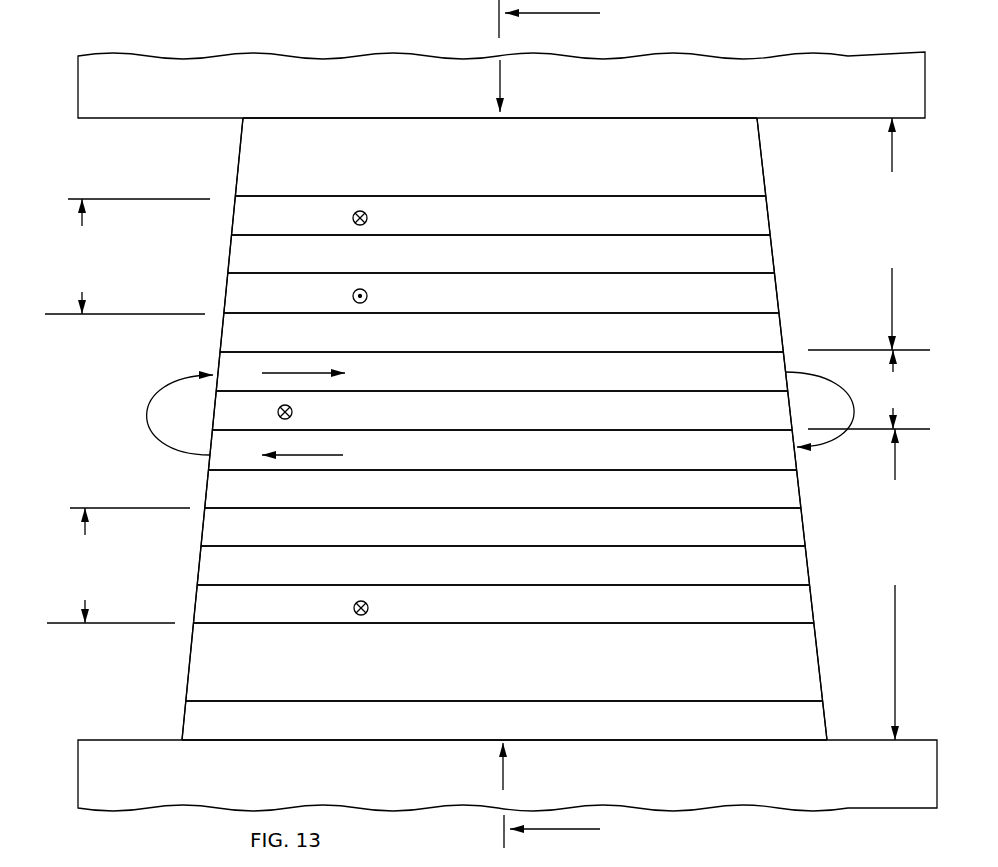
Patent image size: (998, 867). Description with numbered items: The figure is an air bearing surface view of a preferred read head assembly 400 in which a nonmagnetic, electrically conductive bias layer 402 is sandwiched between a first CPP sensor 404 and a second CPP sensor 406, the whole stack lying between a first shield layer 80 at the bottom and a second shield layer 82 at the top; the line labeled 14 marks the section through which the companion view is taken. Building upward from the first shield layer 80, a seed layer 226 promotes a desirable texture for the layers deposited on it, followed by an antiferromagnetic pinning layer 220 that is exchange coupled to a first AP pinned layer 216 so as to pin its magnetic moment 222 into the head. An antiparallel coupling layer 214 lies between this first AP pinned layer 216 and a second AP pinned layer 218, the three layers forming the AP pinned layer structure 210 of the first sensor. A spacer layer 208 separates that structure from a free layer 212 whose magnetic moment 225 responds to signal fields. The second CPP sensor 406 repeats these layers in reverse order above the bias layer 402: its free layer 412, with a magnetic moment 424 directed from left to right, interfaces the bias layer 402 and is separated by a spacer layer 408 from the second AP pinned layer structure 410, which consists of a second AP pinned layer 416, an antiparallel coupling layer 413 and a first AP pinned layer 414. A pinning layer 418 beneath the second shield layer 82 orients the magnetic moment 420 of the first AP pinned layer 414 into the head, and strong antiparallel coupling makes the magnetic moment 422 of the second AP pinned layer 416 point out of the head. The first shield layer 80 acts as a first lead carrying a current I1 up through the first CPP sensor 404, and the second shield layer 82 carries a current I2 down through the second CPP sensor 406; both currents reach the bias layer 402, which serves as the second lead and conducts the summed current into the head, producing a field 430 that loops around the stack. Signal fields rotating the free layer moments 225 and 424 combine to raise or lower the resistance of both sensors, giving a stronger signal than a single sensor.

The section view line for FIG. 14 is at (567, 424).
The magnetic read head assembly 400 is at (800, 45).
The second shield layer 82 is at (655, 90).
The first shield layer 80 is at (740, 784).
The pinning layer 418 is at (745, 157).
The first AP pinned layer 414 is at (743, 212).
The antiparallel coupling layer 413 is at (746, 252).
The second AP pinned layer 416 is at (758, 294).
The spacer layer 408 is at (763, 327).
The free layer 412 is at (774, 366).
The field 430 is at (148, 412).
The bias layer 402 is at (583, 390).
The free layer 212 is at (788, 458).
The spacer layer 208 is at (778, 488).
The second AP pinned layer 218 is at (776, 515).
The antiparallel coupling layer 214 is at (783, 555).
The first AP pinned layer 216 is at (790, 600).
The antiferromagnetic pinning layer 220 is at (806, 666).
The seed layer 226 is at (813, 716).
The magnetic moment 420 is at (353, 217).
The magnetic moment 422 is at (353, 295).
The magnetic moment 424 is at (278, 372).
The magnetic moment 225 is at (292, 460).
The magnetic moment 222 is at (354, 607).
The second CPP sensor 406 is at (892, 234).
The first CPP sensor 404 is at (906, 584).
The second AP pinned layer structure 410 is at (121, 257).
The AP pinned layer structure 210 is at (111, 565).